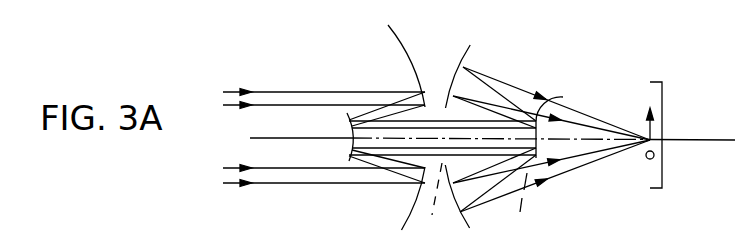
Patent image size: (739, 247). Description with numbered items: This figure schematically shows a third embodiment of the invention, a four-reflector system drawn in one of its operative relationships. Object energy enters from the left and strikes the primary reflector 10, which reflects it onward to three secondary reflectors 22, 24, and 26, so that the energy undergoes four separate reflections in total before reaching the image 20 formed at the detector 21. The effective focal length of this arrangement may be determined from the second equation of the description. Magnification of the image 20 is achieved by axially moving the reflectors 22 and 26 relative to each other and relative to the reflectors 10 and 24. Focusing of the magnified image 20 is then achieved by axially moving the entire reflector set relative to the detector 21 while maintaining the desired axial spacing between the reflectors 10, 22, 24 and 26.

The primary reflector 10 is at (404, 48).
The secondary reflector 22 is at (349, 118).
The secondary reflector 26 is at (474, 49).
The secondary reflector 24 is at (566, 105).
The image 20 is at (647, 158).
The detector 21 is at (663, 90).